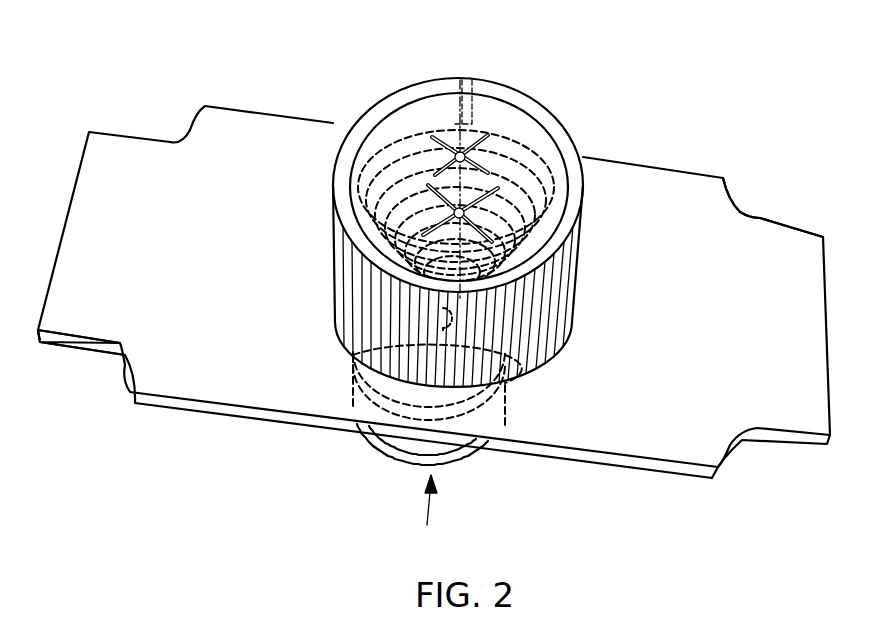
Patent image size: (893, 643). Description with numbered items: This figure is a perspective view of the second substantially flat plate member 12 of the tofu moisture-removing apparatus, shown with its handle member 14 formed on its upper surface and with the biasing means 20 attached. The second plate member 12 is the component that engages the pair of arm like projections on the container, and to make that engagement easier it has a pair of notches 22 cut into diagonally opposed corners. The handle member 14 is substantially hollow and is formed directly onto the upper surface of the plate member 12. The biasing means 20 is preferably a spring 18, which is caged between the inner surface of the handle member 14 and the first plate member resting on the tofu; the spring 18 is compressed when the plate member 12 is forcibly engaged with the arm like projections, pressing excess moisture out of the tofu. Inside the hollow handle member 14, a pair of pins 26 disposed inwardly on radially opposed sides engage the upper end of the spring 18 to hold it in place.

The second substantially flat plate member 12 is at (647, 163).
The handle member 14 is at (525, 103).
The spring 18 is at (505, 456).
The biasing means 20 is at (423, 512).
The notches 22 is at (777, 220).
The pins 26 is at (443, 330).